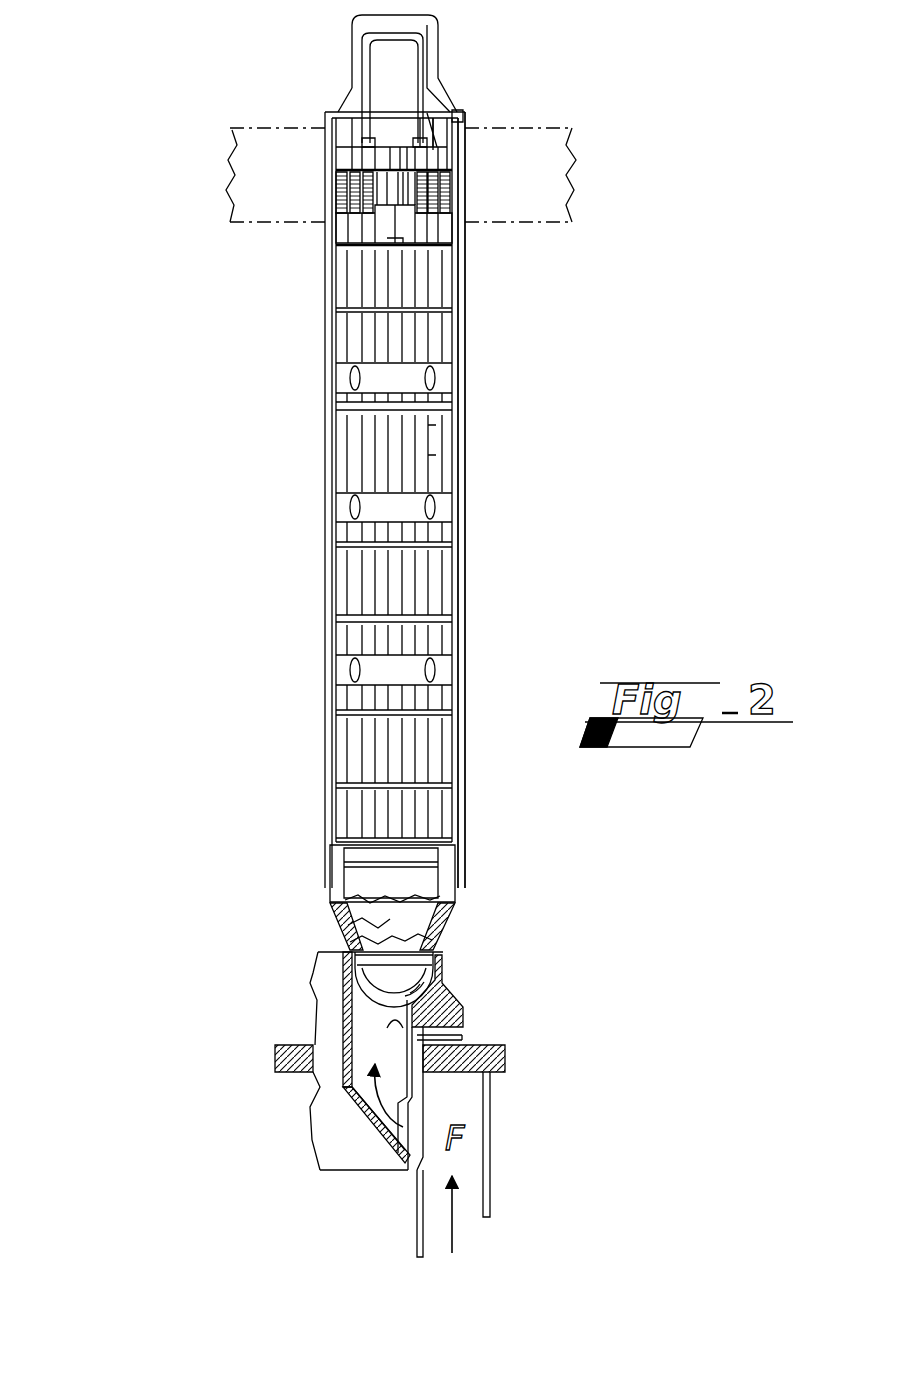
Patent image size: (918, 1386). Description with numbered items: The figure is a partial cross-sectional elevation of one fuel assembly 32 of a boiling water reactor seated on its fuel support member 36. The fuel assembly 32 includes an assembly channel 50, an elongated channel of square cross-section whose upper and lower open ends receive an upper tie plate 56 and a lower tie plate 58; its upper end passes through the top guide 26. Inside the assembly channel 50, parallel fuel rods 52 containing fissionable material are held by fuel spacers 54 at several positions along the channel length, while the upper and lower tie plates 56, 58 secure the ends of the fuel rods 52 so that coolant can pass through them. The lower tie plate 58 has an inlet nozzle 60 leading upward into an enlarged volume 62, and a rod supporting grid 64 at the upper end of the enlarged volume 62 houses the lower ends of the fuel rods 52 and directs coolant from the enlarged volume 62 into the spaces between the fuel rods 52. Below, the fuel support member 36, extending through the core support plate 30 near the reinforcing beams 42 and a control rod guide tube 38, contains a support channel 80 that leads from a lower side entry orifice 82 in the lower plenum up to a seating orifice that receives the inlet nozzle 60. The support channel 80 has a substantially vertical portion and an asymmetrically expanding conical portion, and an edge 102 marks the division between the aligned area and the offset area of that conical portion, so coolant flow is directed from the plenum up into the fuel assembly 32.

The top guide 26 is at (265, 127).
The upper tie plate 56 is at (440, 80).
The fuel assembly 32 is at (476, 303).
The assembly channel 50 is at (466, 747).
The fuel rods 52 is at (418, 562).
The fuel spacers 54 is at (393, 383).
The rod supporting grid 64 is at (440, 855).
The enlarged volume 62 is at (388, 925).
The lower tie plate 58 is at (453, 932).
The inlet nozzle 60 is at (386, 973).
The fuel support member 36 is at (427, 997).
The core support plate 30 is at (488, 1045).
The support channel 80 is at (362, 1075).
The lower side entry orifice 82 is at (427, 1123).
The reinforcing beams 42 is at (503, 1103).
The control rod guide tubes 38 is at (417, 1203).
The edge 102 is at (382, 1073).